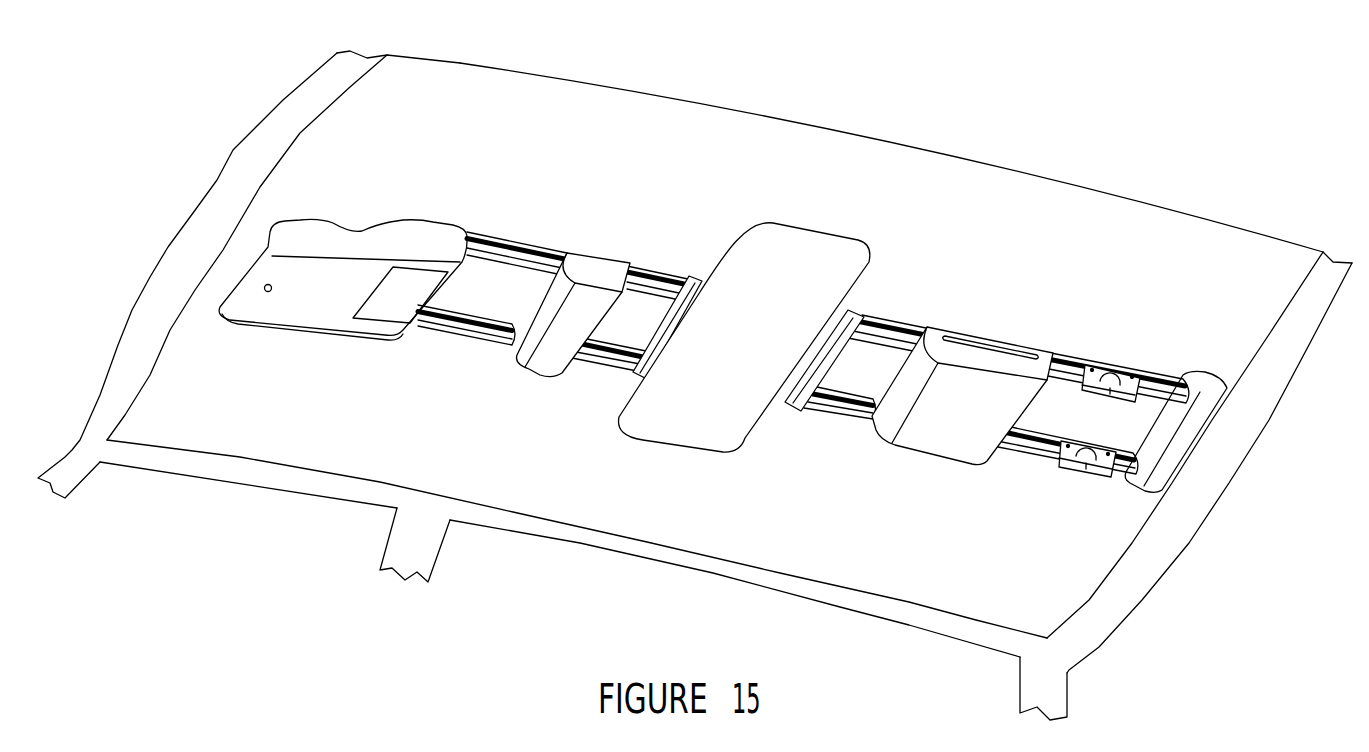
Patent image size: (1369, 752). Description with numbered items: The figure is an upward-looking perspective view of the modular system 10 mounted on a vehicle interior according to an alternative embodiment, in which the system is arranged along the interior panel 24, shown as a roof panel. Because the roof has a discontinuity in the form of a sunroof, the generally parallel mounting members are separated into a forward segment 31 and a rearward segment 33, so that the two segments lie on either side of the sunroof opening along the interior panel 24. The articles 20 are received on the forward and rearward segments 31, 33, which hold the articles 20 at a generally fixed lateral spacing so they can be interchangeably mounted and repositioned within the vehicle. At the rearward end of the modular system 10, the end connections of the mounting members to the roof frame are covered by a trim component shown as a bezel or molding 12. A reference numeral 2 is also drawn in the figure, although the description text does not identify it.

The modular system 10 is at (840, 64).
The interior panel 24 is at (541, 100).
The sunroof cover panel 2 is at (808, 244).
The forward segment 31 is at (507, 250).
The rearward segment 33 is at (895, 330).
The articles 20 is at (548, 358).
The bezel or molding 12 is at (1207, 403).